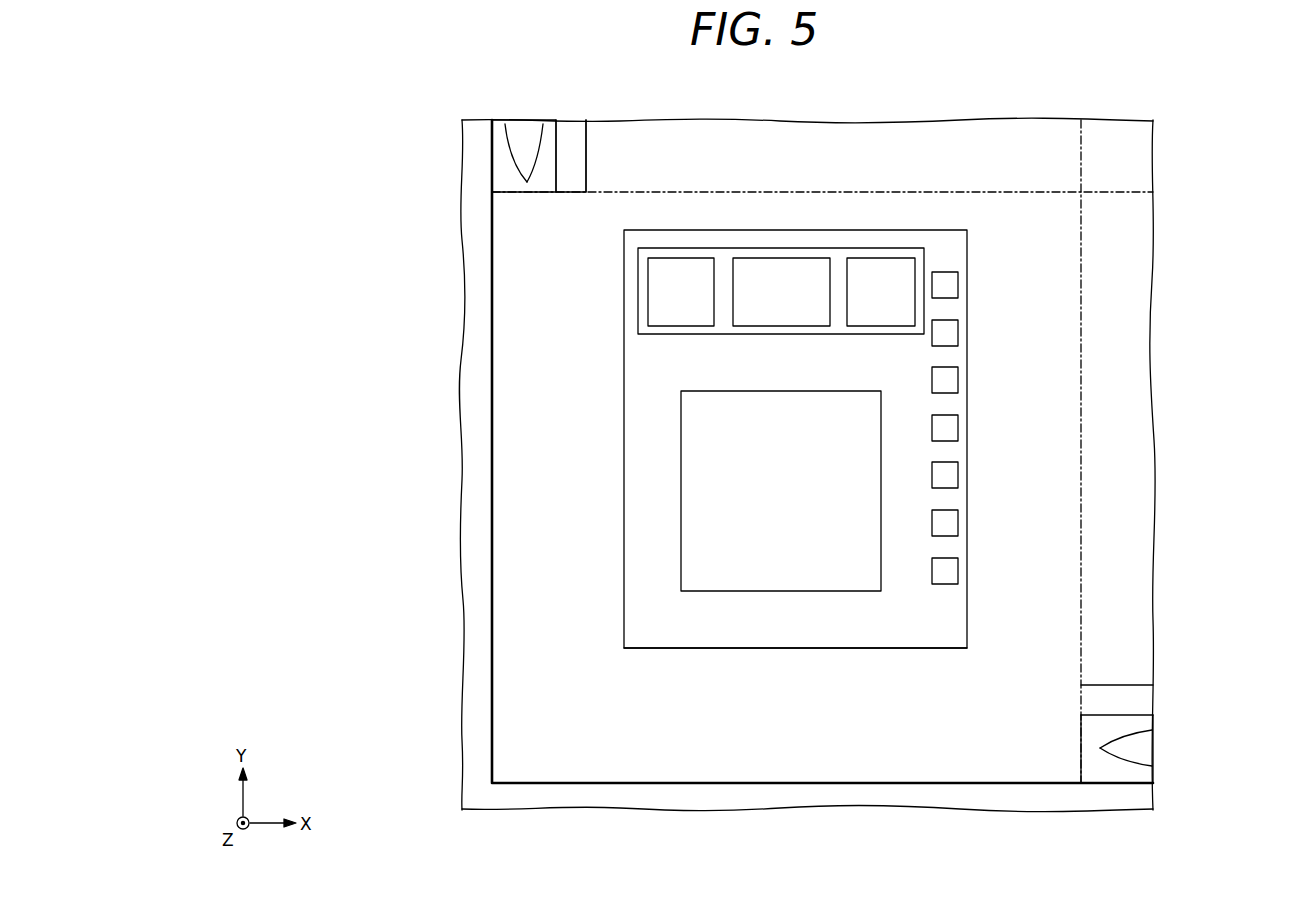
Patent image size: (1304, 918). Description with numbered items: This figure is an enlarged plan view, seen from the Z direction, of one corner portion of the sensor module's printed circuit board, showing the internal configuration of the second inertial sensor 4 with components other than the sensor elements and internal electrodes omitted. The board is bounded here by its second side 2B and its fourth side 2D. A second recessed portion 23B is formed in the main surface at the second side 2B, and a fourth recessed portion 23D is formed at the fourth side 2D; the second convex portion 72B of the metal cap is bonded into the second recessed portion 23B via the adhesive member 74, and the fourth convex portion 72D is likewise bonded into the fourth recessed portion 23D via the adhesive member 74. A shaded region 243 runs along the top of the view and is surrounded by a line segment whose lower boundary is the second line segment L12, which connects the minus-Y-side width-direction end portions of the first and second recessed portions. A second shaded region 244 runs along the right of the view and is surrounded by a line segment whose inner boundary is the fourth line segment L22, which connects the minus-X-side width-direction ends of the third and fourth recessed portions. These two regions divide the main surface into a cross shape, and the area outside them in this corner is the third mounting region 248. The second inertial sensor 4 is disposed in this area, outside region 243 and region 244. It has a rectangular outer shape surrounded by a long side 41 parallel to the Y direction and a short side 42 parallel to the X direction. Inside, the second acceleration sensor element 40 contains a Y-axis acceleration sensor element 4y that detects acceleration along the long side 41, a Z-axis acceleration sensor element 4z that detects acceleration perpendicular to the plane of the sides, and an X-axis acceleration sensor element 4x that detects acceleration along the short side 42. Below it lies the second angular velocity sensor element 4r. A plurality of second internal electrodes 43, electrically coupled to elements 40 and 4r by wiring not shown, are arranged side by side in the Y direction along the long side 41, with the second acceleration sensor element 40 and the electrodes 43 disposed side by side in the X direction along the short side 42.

The second side 2B is at (491, 673).
The fourth side 2D is at (590, 784).
The third mounting region 248 is at (750, 770).
The second convex portion 72B is at (500, 170).
The adhesive member 74 is at (522, 190).
The second recessed portion 23B is at (574, 184).
The region surrounded by line segment L1 243 is at (945, 156).
The second line segment L12 is at (1019, 186).
The region surrounded by line segment L2 244 is at (1126, 472).
The fourth line segment L22 is at (1088, 568).
The fourth recessed portion 23D is at (1081, 698).
The fourth convex portion 72D is at (1100, 774).
The second inertial sensor 4 is at (756, 439).
The long side 41 is at (622, 490).
The second acceleration sensor element 40 is at (637, 334).
The Y-axis acceleration sensor element 4y is at (691, 327).
The Z-axis acceleration sensor element 4z is at (774, 327).
The X-axis acceleration sensor element 4x is at (886, 327).
The second angular velocity sensor element 4r is at (689, 450).
The short side 42 is at (657, 650).
The second internal electrodes 43 is at (960, 571).